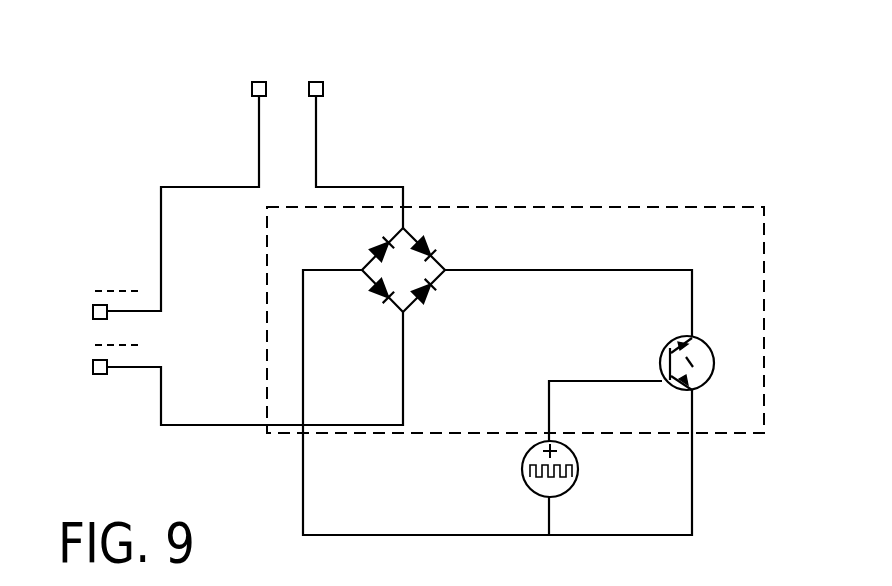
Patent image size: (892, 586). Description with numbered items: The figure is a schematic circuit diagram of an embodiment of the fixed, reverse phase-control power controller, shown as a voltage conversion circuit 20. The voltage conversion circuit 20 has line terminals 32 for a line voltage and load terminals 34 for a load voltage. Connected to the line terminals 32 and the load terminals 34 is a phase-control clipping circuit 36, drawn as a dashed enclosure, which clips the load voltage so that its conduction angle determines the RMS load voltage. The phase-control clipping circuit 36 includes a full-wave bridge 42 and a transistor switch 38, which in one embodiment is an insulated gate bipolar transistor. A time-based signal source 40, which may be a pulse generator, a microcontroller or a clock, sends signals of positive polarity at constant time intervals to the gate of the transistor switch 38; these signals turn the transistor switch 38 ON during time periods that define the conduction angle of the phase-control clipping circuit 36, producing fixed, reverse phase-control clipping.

The voltage conversion circuit 20 is at (524, 150).
The line terminals 32 is at (93, 367).
The load terminals 34 is at (310, 83).
The phase-control clipping circuit 36 is at (766, 228).
The transistor switch 38 is at (709, 351).
The time-based signal source 40 is at (522, 477).
The full-wave bridge 42 is at (370, 282).